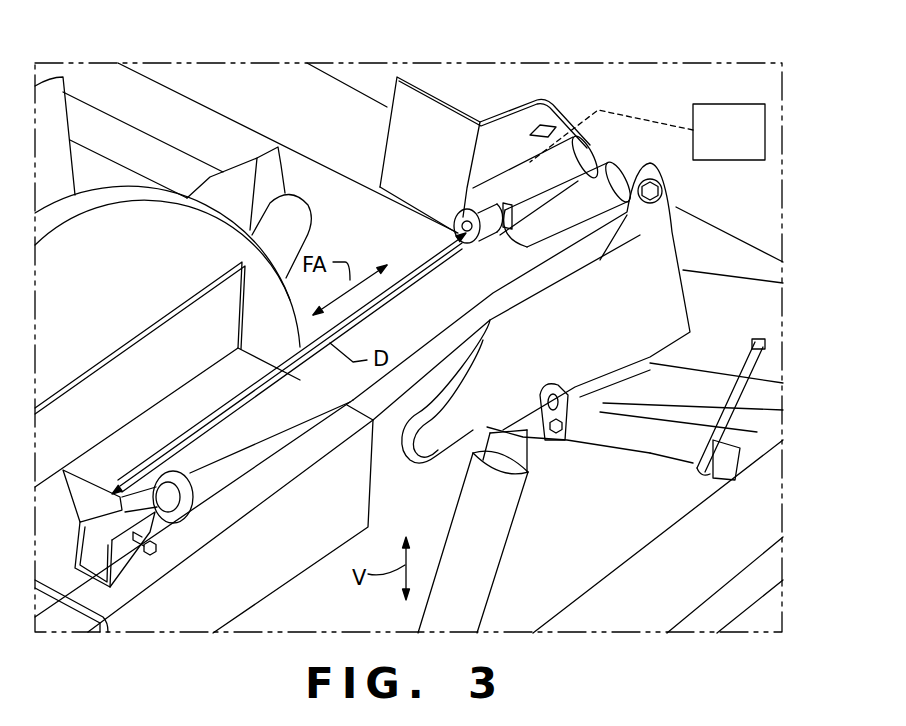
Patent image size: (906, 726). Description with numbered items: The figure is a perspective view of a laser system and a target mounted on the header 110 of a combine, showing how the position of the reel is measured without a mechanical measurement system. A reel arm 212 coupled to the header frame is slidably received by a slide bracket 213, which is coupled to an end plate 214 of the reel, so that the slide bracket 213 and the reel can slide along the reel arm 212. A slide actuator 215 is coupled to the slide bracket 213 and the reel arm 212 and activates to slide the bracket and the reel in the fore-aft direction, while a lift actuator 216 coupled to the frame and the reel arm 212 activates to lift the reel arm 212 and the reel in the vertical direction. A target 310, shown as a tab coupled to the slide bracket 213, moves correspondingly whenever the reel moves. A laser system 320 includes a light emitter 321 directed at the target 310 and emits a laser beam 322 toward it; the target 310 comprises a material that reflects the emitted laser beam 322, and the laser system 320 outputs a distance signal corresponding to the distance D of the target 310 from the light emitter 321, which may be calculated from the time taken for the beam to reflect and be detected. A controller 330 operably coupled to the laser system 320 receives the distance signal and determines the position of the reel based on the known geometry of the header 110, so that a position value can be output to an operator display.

The header 110 is at (592, 92).
The reel arm 212 is at (387, 477).
The slide bracket 213 is at (257, 353).
The end plate 214 is at (126, 304).
The slide actuator 215 is at (490, 303).
The lift actuator 216 is at (513, 544).
The target 310 is at (90, 477).
The laser system 320 is at (500, 150).
The light emitter 321 is at (467, 218).
The laser beam 322 is at (423, 260).
The controller 330 is at (725, 162).